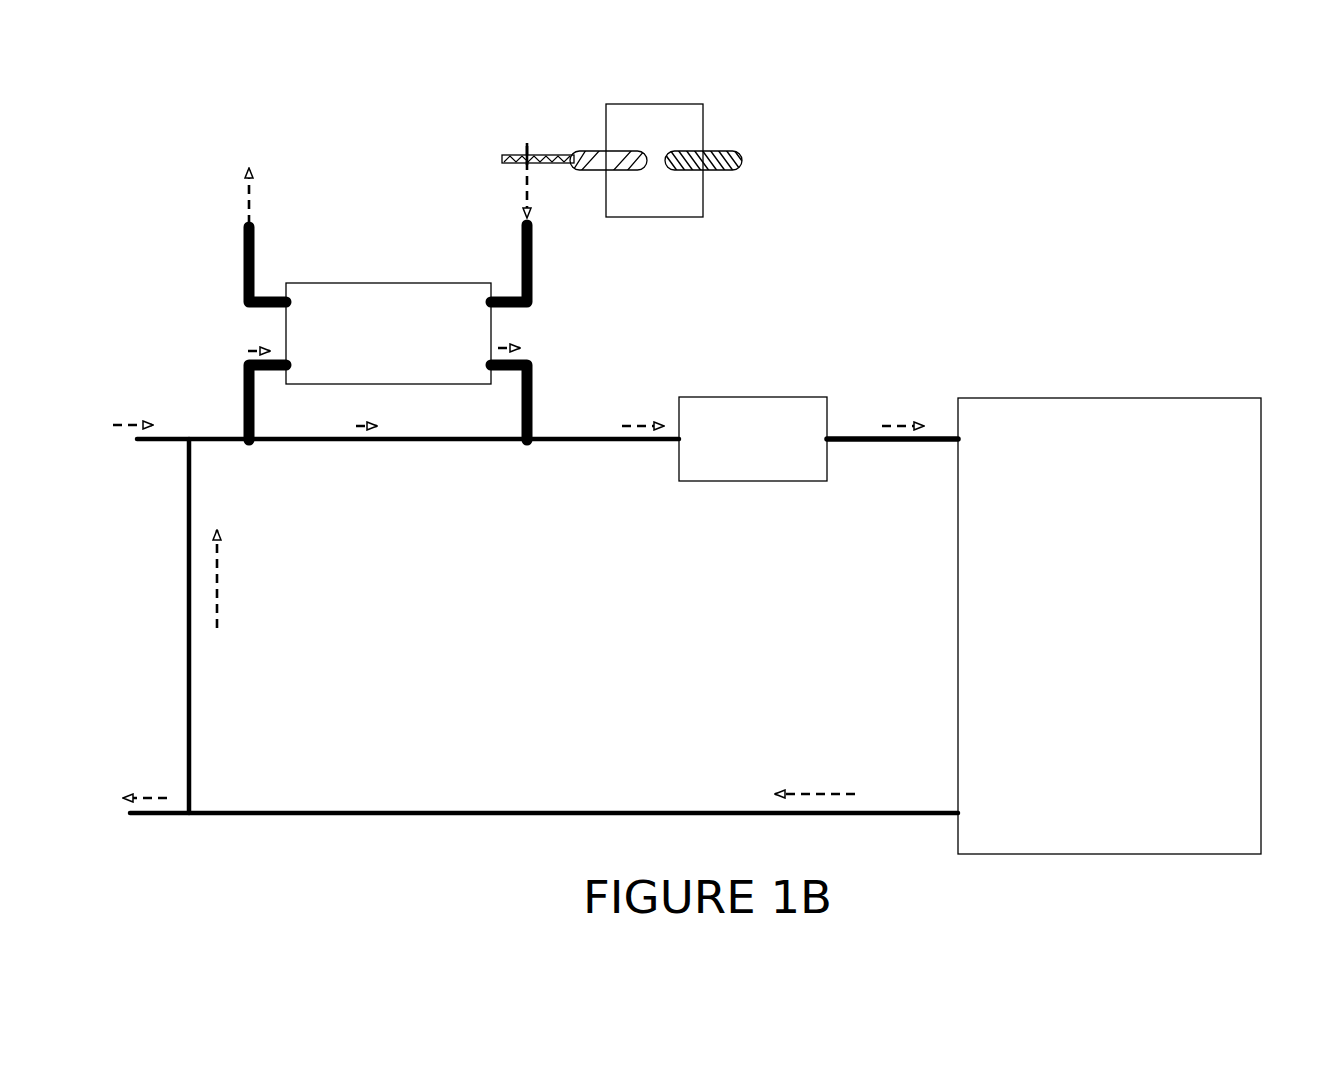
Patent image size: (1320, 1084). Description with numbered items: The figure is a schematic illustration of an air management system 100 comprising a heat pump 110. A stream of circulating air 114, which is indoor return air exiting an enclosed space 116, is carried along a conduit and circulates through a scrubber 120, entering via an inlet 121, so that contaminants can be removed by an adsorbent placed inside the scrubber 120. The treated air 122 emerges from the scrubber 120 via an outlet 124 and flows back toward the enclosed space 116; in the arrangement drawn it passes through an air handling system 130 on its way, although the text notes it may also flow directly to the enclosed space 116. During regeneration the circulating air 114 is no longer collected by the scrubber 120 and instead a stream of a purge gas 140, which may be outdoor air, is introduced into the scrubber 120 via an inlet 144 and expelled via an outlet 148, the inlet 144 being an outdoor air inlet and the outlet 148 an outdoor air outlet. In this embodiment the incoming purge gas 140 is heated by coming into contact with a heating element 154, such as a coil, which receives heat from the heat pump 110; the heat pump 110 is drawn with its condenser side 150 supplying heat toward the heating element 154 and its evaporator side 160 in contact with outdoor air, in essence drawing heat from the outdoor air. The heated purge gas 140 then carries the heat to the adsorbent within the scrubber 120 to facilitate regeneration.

The air management system 100 is at (1240, 228).
The heat pump 110 is at (638, 217).
The circulating air 114 is at (258, 348).
The enclosed space 116 is at (1030, 398).
The scrubber 120 is at (346, 283).
The inlet 121 is at (243, 396).
The treated air 122 is at (506, 345).
The outlet 124 is at (533, 418).
The air handling system 130 is at (776, 397).
The purge gas 140 is at (527, 186).
The inlet 144 is at (533, 300).
The outlet 148 is at (243, 262).
The condenser side 150 is at (573, 151).
The heating element 154 is at (502, 158).
The evaporator side 160 is at (723, 169).